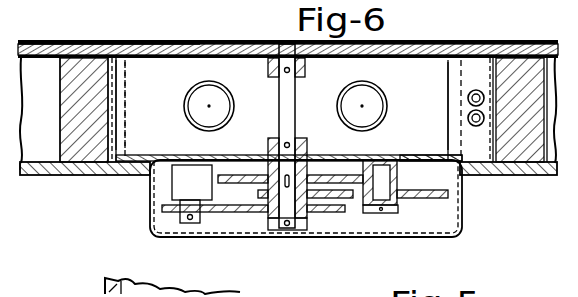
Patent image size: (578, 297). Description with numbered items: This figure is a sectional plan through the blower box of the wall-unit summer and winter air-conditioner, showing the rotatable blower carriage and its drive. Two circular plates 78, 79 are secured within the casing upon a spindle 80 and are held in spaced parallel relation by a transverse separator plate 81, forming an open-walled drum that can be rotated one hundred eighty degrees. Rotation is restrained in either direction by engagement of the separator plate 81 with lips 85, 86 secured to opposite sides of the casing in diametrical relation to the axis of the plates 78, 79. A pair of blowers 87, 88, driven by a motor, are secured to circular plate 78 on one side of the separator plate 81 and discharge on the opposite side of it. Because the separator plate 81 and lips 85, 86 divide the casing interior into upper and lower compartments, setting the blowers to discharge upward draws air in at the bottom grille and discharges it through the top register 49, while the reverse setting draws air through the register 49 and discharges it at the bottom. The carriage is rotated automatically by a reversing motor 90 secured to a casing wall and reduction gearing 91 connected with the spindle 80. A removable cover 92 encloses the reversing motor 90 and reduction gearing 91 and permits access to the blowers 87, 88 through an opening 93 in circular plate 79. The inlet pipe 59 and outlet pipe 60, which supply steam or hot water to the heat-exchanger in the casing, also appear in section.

The register 49 is at (0, 232).
The inlet pipe 59 is at (468, 98).
The outlet pipe 60 is at (468, 118).
The circular plate 78 is at (192, 65).
The circular plate 79 is at (421, 152).
The spindle 80 is at (280, 110).
The separator plate 81 is at (153, 82).
The lip 85 is at (450, 78).
The lip 86 is at (125, 88).
The blower 87 is at (338, 97).
The blower 88 is at (183, 118).
The reversing motor 90 is at (180, 187).
The reduction gearing 91 is at (338, 198).
The removable cover 92 is at (218, 238).
The opening 93 is at (148, 168).